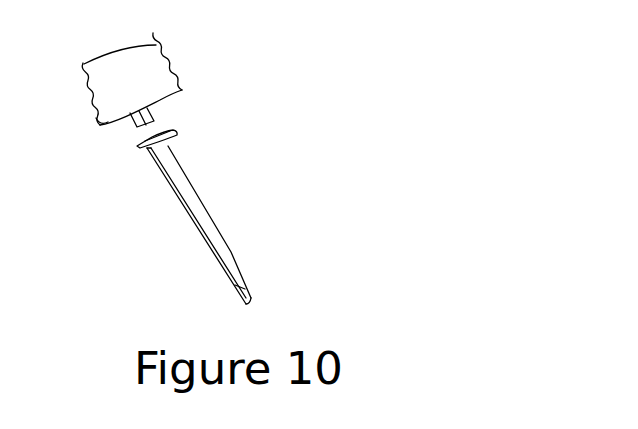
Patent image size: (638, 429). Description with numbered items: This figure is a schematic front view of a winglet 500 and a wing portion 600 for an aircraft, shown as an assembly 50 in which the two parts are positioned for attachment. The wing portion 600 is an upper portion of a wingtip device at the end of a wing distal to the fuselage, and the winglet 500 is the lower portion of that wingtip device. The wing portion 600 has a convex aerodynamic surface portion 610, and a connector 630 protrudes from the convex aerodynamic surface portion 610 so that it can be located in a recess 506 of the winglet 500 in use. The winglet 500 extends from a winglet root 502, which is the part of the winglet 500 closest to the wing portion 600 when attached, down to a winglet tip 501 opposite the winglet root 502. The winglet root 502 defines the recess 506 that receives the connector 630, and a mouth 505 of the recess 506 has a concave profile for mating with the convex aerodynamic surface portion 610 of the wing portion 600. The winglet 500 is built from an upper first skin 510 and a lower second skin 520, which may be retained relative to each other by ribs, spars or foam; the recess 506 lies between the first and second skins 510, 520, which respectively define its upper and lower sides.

The wing portion 600 is at (193, 86).
The convex aerodynamic surface portion 610 is at (106, 130).
The connector 630 is at (155, 119).
The assembly 50 is at (255, 142).
The winglet 500 is at (211, 226).
The winglet tip 501 is at (251, 302).
The winglet root 502 is at (148, 149).
The mouth 505 is at (137, 145).
The recess 506 is at (164, 146).
The upper first skin 510 is at (210, 213).
The lower second skin 520 is at (199, 231).